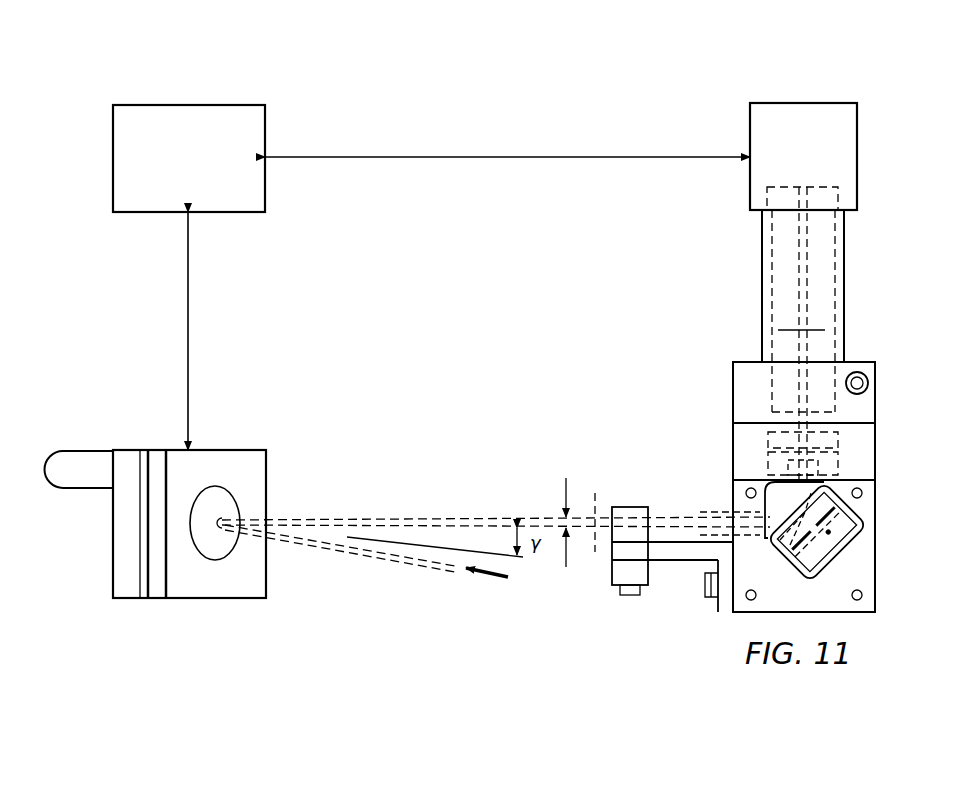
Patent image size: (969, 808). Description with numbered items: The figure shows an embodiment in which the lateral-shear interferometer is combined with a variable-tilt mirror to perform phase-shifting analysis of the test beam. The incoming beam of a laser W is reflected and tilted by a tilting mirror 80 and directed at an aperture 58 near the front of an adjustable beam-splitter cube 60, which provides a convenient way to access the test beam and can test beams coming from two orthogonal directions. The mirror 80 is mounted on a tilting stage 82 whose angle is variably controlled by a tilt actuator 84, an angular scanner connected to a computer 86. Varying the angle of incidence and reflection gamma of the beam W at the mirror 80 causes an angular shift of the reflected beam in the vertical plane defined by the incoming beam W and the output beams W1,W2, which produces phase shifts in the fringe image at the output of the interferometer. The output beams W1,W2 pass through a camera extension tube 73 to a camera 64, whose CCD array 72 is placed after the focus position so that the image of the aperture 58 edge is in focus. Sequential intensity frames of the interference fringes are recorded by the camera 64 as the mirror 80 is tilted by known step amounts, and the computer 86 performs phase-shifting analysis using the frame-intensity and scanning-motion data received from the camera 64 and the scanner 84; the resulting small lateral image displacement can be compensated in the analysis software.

The aperture 58 is at (566, 480).
The adjustable beam-splitter cube 60 is at (628, 506).
The camera 64 is at (804, 102).
The CCD array 72 is at (816, 186).
The camera extension tube 73 is at (762, 320).
The tilting mirror 80 is at (226, 488).
The tilting stage 82 is at (217, 600).
The tilt actuator 84 is at (80, 450).
The computer 86 is at (148, 103).
The incoming laser beam W is at (380, 557).
The output beams W1,W2 is at (787, 263).